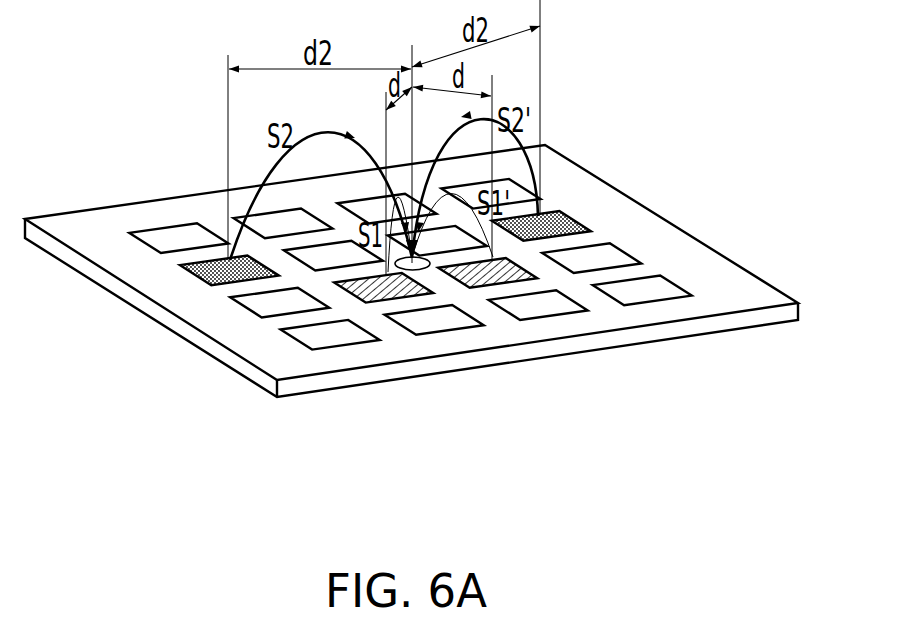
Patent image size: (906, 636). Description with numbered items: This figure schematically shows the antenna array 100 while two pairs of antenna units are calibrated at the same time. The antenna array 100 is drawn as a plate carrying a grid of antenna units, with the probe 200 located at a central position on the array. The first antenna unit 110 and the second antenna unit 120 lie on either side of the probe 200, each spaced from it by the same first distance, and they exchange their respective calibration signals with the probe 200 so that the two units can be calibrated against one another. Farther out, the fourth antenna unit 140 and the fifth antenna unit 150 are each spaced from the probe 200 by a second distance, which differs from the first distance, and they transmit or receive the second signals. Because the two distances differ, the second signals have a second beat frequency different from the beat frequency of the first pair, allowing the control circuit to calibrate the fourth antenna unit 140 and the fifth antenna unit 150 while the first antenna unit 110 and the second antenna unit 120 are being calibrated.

The antenna array 100 is at (786, 314).
The first antenna unit 110 is at (410, 297).
The second antenna unit 120 is at (527, 277).
The fourth antenna unit 140 is at (187, 273).
The fifth antenna unit 150 is at (572, 215).
The probe 200 is at (427, 267).